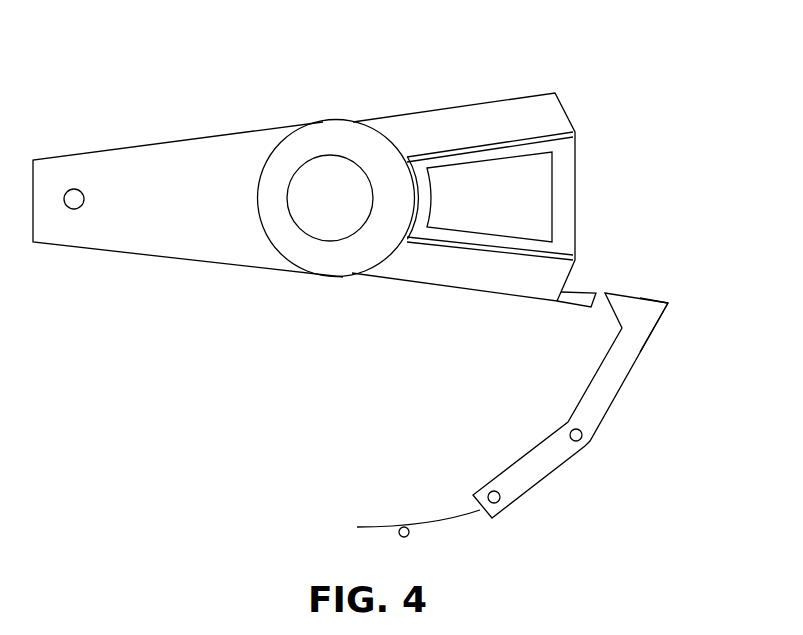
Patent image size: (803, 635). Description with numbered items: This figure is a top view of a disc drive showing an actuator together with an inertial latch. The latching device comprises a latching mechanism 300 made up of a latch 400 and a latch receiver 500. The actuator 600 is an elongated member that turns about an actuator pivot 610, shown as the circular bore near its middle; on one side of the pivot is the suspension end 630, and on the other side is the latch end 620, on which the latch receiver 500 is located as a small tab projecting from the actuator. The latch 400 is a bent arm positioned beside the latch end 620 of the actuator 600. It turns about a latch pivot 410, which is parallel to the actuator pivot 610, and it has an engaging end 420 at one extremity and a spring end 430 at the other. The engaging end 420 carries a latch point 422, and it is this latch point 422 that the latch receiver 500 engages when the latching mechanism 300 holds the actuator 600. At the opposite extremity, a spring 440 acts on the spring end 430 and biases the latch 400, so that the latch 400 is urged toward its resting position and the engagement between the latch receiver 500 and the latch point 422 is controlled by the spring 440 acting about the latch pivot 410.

The latching mechanism 300 is at (680, 77).
The latch 400 is at (632, 372).
The latch pivot 410 is at (578, 441).
The engaging end 420 is at (655, 322).
The latch point 422 is at (668, 303).
The spring end 430 is at (480, 490).
The spring 440 is at (437, 522).
The latch receiver 500 is at (573, 303).
The actuator 600 is at (123, 253).
The actuator pivot 610 is at (318, 178).
The latch end 620 is at (562, 107).
The suspension end 630 is at (62, 155).